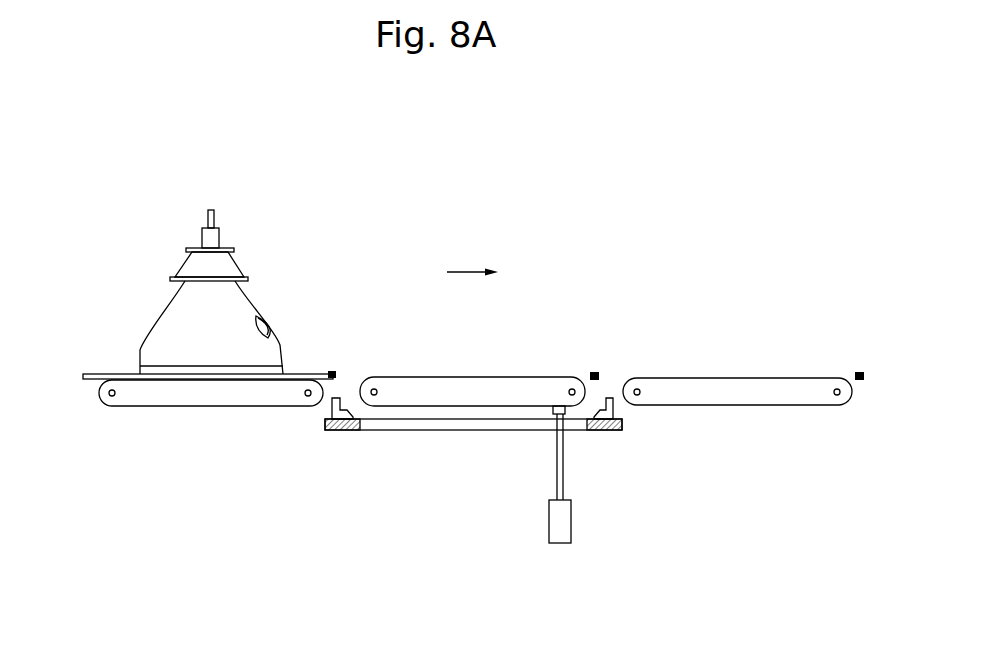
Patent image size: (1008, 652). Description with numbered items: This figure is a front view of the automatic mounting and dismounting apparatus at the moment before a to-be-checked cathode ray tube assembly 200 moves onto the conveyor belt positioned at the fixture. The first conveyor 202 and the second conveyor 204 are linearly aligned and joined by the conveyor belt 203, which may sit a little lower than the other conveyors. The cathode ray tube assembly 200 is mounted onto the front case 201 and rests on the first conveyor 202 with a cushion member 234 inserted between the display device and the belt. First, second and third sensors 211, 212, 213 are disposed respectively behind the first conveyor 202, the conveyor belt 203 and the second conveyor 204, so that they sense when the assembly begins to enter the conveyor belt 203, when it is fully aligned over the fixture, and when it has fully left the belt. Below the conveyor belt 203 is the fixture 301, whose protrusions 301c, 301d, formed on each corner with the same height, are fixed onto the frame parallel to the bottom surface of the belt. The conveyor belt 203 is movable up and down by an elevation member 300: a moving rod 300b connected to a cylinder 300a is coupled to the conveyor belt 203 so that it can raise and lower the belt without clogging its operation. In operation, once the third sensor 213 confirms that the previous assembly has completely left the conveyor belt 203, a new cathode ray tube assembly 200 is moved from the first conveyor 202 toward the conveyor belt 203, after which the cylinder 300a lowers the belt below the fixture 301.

The cathode ray tube assembly 200 is at (245, 312).
The front case 201 is at (173, 370).
The first conveyor 202 is at (145, 406).
The conveyor belt 203 is at (445, 383).
The second conveyor 204 is at (805, 400).
The first sensor 211 is at (333, 371).
The second sensor 212 is at (593, 371).
The third sensor 213 is at (860, 371).
The cushion member 234 is at (100, 374).
The elevation member 300 is at (612, 509).
The cylinder 300a is at (560, 543).
The moving rod 300b is at (563, 477).
The fixture 301 is at (385, 425).
The protrusion 301c is at (331, 410).
The protrusion 301d is at (608, 398).